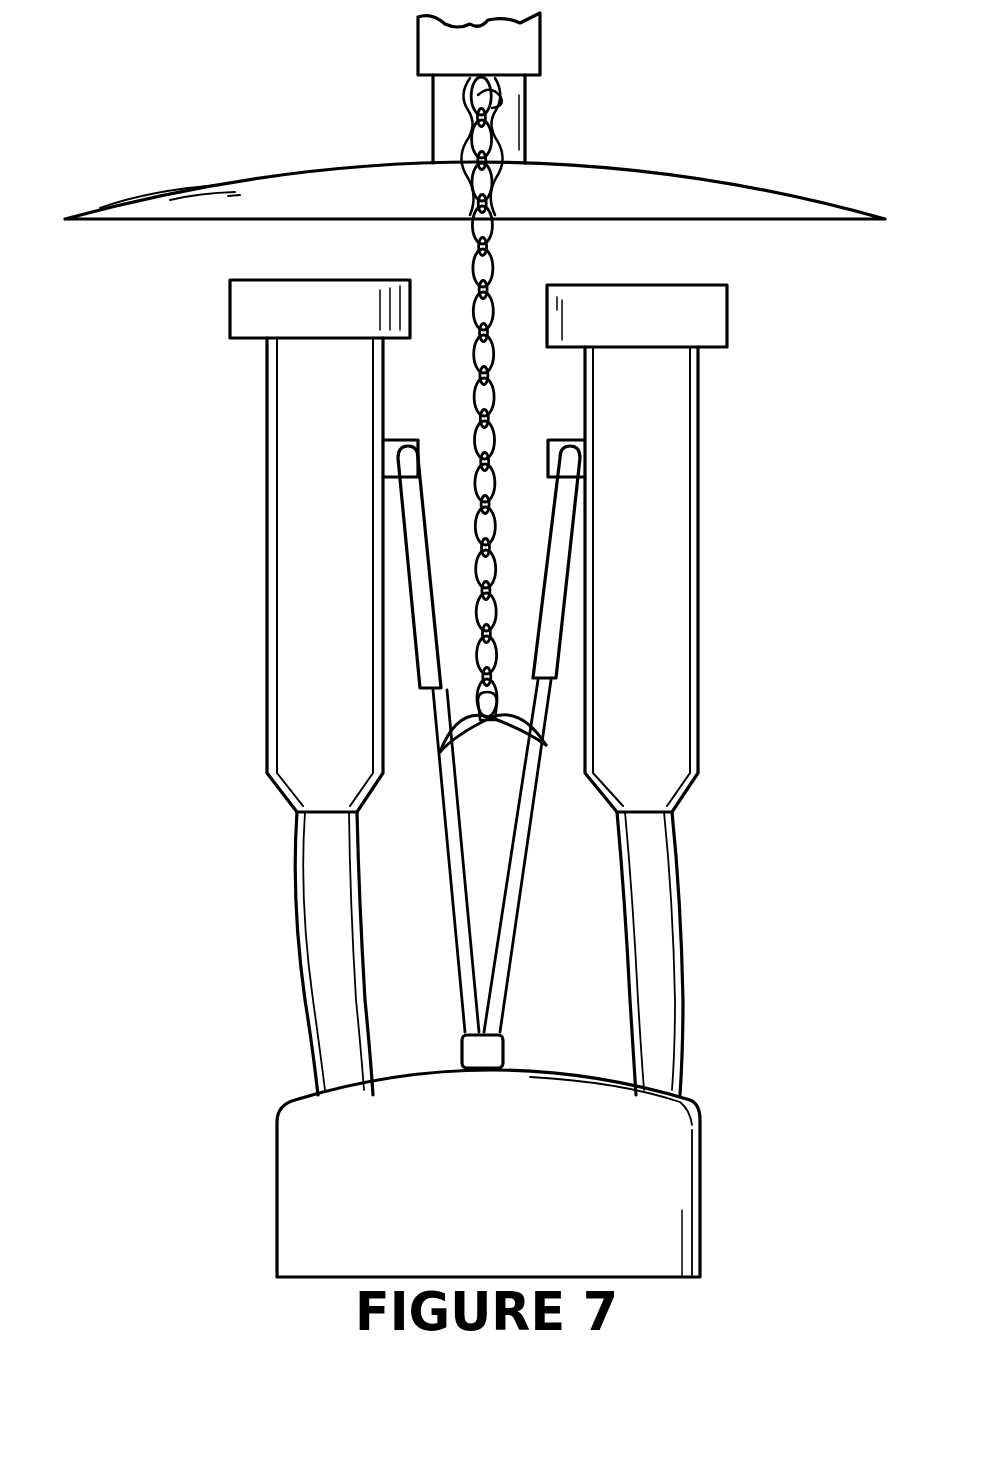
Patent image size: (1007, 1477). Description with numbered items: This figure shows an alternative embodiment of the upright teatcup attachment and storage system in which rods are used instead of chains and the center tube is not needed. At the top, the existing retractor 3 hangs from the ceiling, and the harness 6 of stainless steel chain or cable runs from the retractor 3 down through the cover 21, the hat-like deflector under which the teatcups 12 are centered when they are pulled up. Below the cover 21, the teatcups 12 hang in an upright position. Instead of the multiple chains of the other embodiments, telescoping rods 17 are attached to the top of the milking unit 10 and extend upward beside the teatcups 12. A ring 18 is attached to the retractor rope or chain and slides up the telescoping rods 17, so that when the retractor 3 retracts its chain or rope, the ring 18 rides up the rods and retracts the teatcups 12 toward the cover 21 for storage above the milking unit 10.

The retractor 3 is at (418, 46).
The harness 6 is at (490, 97).
The cover 21 is at (337, 165).
The teatcups 12 is at (700, 410).
The telescoping rods 17 is at (538, 603).
The ring 18 is at (505, 725).
The milking unit 10 is at (275, 1123).